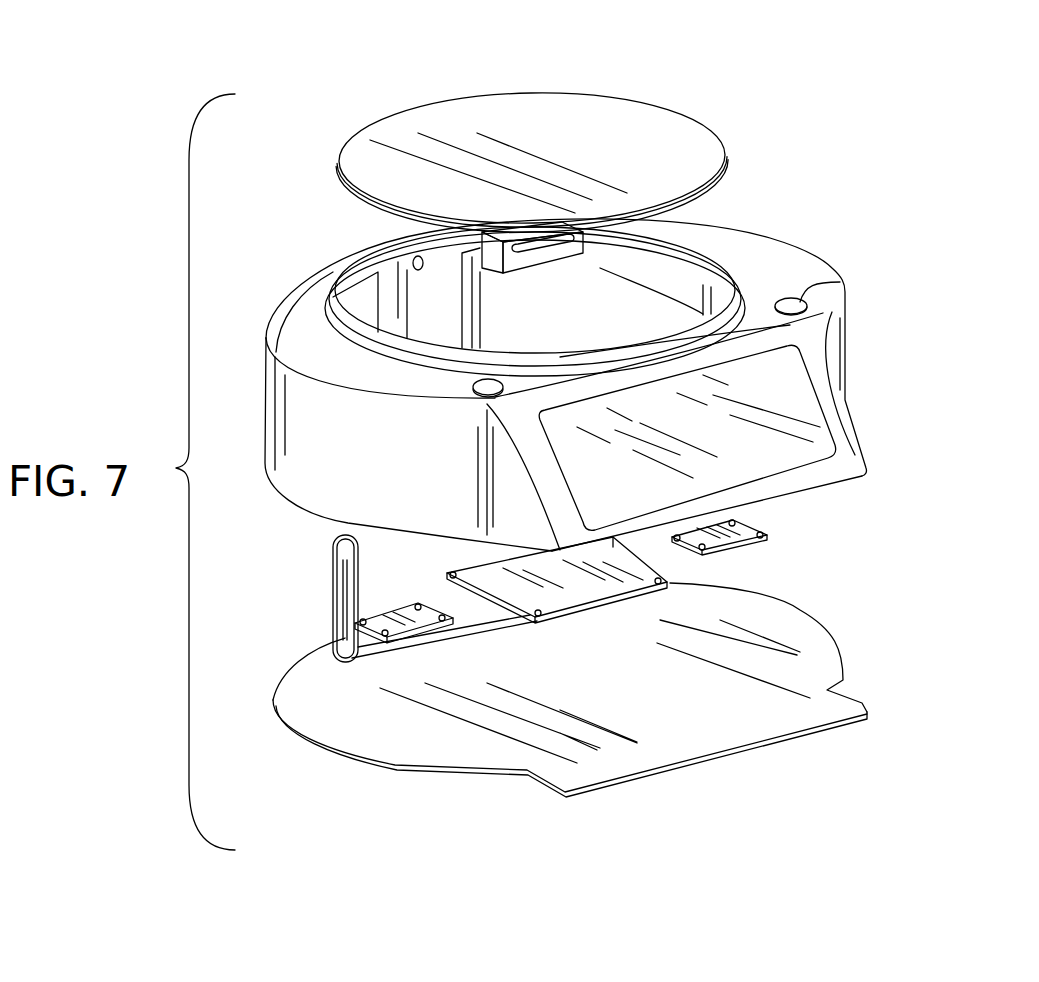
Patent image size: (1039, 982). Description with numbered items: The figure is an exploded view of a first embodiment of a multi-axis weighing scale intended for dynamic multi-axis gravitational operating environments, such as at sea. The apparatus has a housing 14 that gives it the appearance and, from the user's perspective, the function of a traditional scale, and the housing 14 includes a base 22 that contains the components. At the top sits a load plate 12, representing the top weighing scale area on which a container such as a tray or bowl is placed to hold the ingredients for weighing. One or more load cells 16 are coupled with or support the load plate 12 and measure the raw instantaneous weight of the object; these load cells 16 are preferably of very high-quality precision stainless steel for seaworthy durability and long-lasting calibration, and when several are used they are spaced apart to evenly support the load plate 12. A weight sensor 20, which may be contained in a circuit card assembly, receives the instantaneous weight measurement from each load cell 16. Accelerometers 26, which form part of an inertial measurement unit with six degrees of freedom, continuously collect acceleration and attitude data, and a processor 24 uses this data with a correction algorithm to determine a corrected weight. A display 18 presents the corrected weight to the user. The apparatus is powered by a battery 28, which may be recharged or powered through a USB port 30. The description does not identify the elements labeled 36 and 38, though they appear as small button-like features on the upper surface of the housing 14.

The load plate 12 is at (615, 117).
The housing 14 is at (760, 250).
The load cell 16 is at (578, 252).
The display 18 is at (823, 445).
The weight sensor 20 is at (757, 521).
The base 22 is at (737, 727).
The processor 24 is at (533, 595).
The accelerometer 26 is at (388, 635).
The battery 28 is at (335, 547).
The USB port 30 is at (333, 277).
The button 36 is at (840, 282).
The button 38 is at (474, 391).